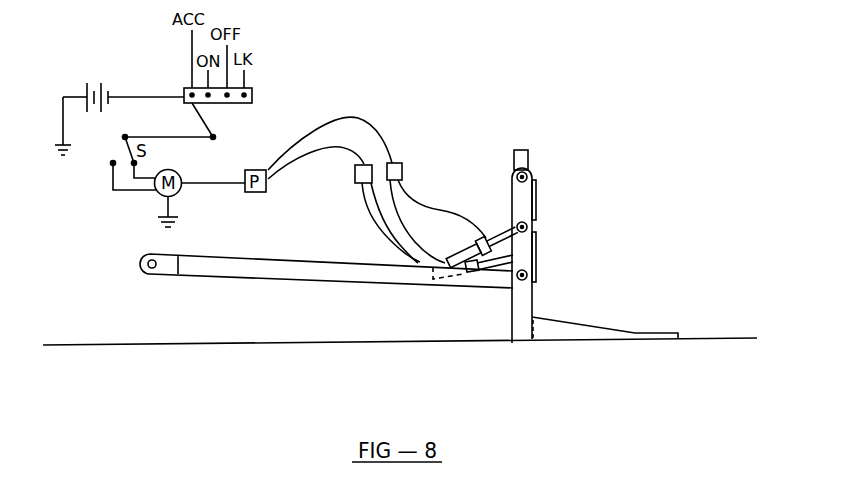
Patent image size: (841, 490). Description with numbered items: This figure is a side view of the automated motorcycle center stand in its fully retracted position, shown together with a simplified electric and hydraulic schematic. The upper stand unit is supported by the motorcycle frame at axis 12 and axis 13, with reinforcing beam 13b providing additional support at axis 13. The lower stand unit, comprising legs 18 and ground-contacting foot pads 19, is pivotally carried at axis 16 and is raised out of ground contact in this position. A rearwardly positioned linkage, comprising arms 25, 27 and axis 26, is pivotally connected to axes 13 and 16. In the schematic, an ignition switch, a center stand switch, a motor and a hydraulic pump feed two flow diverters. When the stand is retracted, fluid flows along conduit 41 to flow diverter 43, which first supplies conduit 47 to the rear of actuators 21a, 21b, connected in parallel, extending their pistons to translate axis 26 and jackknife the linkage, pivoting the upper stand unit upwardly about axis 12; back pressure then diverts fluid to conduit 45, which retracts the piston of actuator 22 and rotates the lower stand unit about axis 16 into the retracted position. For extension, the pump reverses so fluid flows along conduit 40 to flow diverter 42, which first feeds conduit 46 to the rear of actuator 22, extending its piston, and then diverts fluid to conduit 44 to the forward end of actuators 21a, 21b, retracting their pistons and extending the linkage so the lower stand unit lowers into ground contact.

The axis 12 is at (141, 271).
The axis 13 is at (528, 175).
The reinforcing beam 13b is at (527, 157).
The axis 16 is at (528, 277).
The legs 18 is at (525, 310).
The ground-contacting foot pads 19 is at (618, 335).
The actuator 21a is at (482, 197).
The actuator 21b is at (466, 256).
The actuator 22 is at (463, 280).
The arm 25 is at (523, 200).
The axis 26 is at (532, 227).
The arm 27 is at (527, 250).
The conduit 40 is at (320, 132).
The conduit 41 is at (320, 152).
The flow diverter 42 is at (395, 163).
The flow diverter 43 is at (357, 184).
The conduit 44 is at (435, 205).
The conduit 45 is at (393, 225).
The conduit 46 is at (420, 238).
The conduit 47 is at (377, 233).